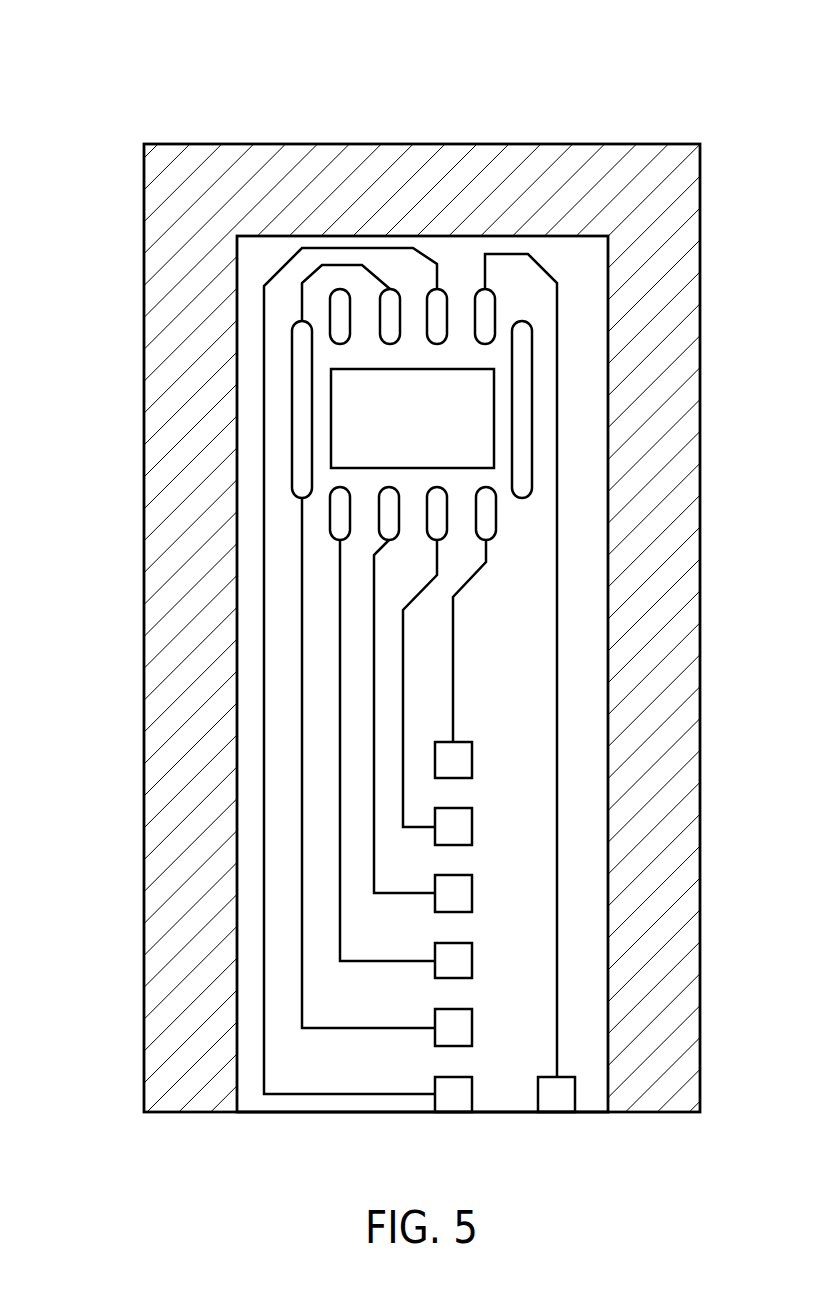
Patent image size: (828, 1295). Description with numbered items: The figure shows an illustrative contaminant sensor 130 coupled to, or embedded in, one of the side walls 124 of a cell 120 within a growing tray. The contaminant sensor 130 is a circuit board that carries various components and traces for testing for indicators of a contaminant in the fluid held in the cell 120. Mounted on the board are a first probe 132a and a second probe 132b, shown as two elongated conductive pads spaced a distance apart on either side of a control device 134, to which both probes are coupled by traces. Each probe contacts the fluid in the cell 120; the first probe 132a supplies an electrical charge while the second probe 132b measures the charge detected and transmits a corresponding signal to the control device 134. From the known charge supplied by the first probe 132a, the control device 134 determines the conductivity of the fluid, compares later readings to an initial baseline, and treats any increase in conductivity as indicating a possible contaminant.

The cell 120 is at (371, 560).
The side wall 124 is at (371, 628).
The contaminant sensor 130 is at (422, 606).
The first probe 132a is at (230, 409).
The second probe 132b is at (592, 409).
The control device 134 is at (440, 476).